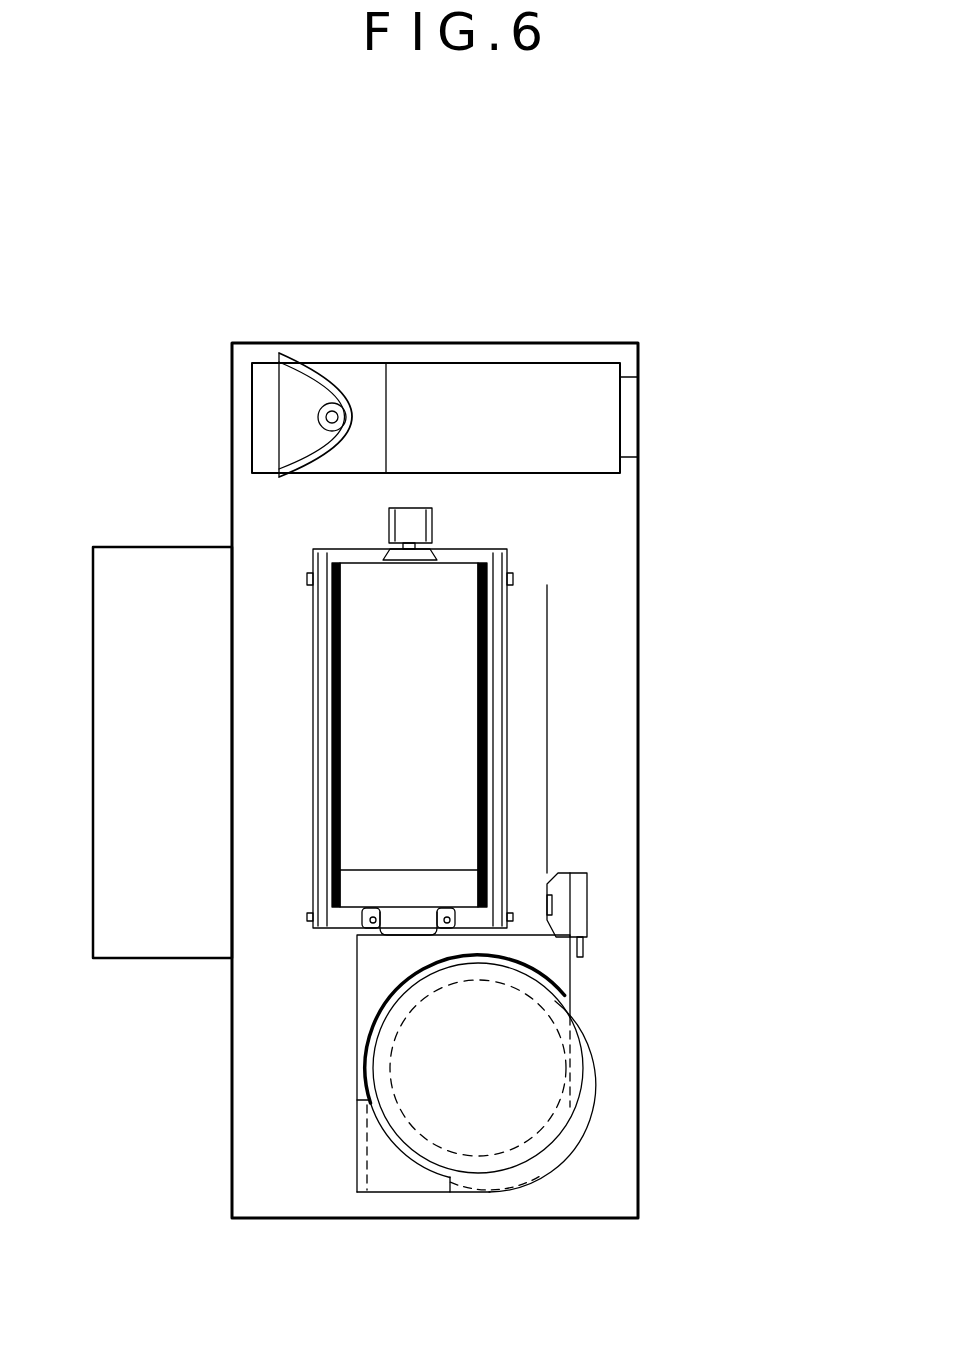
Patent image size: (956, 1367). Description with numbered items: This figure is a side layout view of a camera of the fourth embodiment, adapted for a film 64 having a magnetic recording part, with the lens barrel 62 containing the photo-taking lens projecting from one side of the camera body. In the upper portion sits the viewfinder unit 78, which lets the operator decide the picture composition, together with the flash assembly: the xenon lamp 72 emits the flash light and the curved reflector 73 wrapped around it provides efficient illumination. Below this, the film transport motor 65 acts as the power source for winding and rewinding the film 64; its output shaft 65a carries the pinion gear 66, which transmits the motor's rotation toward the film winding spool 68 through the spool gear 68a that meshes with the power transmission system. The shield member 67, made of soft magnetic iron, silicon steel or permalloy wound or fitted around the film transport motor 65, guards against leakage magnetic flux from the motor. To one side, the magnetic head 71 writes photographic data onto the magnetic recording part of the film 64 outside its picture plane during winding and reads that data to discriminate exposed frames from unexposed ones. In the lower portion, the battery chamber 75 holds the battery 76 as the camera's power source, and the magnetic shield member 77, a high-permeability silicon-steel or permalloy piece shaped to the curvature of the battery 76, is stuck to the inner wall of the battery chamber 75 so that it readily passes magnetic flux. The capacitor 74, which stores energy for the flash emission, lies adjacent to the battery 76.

The lens barrel 62 is at (157, 542).
The film 64 is at (547, 632).
The film transport motor 65 is at (353, 562).
The output shaft 65a is at (450, 548).
The pinion gear 66 is at (432, 525).
The shield member 67 is at (487, 728).
The film winding spool 68 is at (327, 865).
The spool gear 68a is at (313, 560).
The magnetic head 71 is at (577, 897).
The xenon lamp 72 is at (332, 403).
The reflector 73 is at (288, 362).
The capacitor 74 is at (597, 1073).
The battery chamber 75 is at (357, 1003).
The battery 76 is at (530, 1160).
The magnetic shield member 77 is at (530, 963).
The viewfinder unit 78 is at (532, 363).